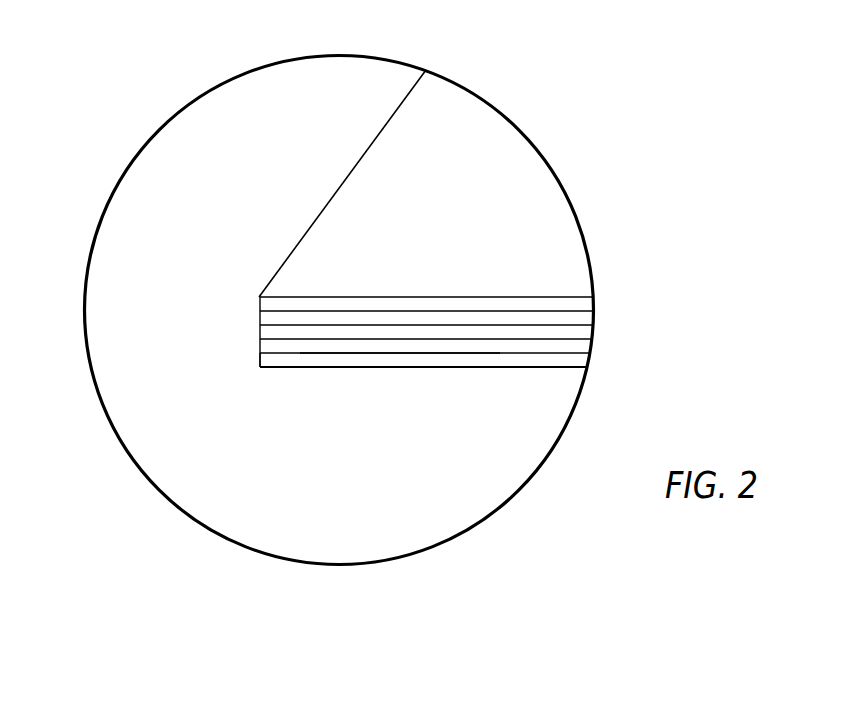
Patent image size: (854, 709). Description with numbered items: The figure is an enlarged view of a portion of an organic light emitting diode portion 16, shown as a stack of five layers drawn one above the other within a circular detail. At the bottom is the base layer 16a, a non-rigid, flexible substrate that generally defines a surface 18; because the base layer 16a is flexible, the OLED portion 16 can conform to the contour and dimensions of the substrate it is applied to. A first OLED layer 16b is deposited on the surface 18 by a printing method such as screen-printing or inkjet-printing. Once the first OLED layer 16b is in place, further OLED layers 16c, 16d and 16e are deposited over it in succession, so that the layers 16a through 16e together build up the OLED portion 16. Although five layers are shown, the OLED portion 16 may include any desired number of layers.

The OLED portion 16 is at (296, 167).
The base layer 16a is at (260, 361).
The first OLED layer 16b is at (260, 346).
The second OLED layer 16c is at (260, 332).
The third OLED layer 16d is at (260, 318).
The fourth OLED layer 16e is at (260, 304).
The surface 18 is at (362, 353).